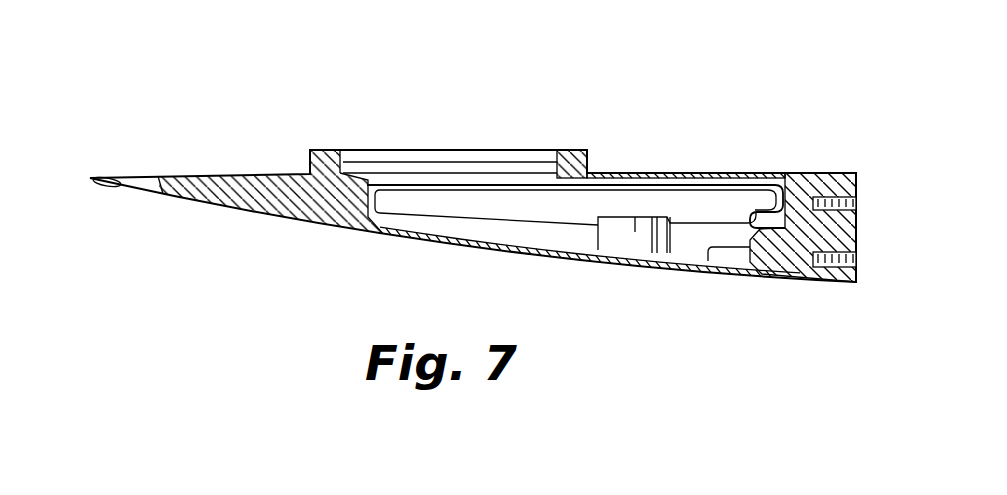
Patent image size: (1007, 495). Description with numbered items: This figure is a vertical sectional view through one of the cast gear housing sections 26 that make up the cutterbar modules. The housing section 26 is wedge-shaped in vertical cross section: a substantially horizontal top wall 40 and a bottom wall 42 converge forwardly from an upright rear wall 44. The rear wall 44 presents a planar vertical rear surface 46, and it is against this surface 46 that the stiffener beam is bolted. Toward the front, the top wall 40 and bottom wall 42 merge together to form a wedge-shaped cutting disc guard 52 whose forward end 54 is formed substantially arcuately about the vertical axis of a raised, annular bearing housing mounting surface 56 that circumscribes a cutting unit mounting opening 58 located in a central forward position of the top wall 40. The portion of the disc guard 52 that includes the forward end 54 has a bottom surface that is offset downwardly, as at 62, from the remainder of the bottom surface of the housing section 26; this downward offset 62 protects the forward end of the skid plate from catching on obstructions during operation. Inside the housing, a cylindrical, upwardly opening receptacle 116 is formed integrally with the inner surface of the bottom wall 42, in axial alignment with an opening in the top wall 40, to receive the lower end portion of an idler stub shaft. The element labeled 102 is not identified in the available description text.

The gear housing section 26 is at (238, 164).
The forward end 54 is at (91, 177).
The tip insert 102 is at (128, 193).
The cutting disc guard 52 is at (195, 205).
The downward offset 62 is at (253, 215).
The raised annular bearing housing mounting surface 56 is at (327, 150).
The cutting unit mounting opening 58 is at (432, 157).
The top wall 40 is at (667, 173).
The receptacle 116 is at (607, 214).
The bottom wall 42 is at (642, 267).
The rear wall 44 is at (756, 187).
The rear surface 46 is at (860, 222).